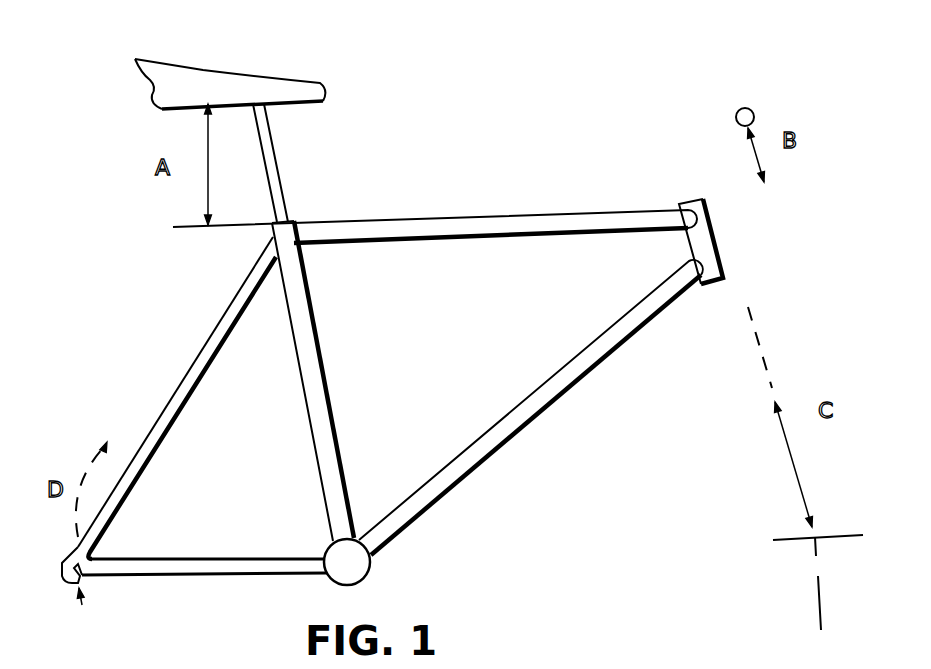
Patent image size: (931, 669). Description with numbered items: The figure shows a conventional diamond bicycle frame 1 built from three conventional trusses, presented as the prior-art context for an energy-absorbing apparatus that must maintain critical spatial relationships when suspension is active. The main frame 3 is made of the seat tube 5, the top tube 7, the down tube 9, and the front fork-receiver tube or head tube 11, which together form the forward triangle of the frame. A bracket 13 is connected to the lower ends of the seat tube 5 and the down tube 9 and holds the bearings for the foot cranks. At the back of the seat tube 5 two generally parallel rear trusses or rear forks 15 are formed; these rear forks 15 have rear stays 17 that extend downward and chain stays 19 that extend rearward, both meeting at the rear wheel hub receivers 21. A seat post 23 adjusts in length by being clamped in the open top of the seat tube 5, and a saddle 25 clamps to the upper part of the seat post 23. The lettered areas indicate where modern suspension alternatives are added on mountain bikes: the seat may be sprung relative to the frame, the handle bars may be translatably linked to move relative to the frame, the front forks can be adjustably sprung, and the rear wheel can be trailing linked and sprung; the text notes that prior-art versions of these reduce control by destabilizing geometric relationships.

The bicycle frame 1 is at (492, 157).
The main frame 3 is at (317, 213).
The seat tube 5 is at (334, 403).
The top tube 7 is at (573, 236).
The down tube 9 is at (566, 397).
The head tube 11 is at (718, 252).
The bracket 13 is at (371, 566).
The rear forks 15 is at (243, 272).
The rear stays 17 is at (203, 378).
The chain stays 19 is at (262, 572).
The rear wheel hub receivers 21 is at (67, 584).
The seat post 23 is at (272, 203).
The saddle 25 is at (203, 70).